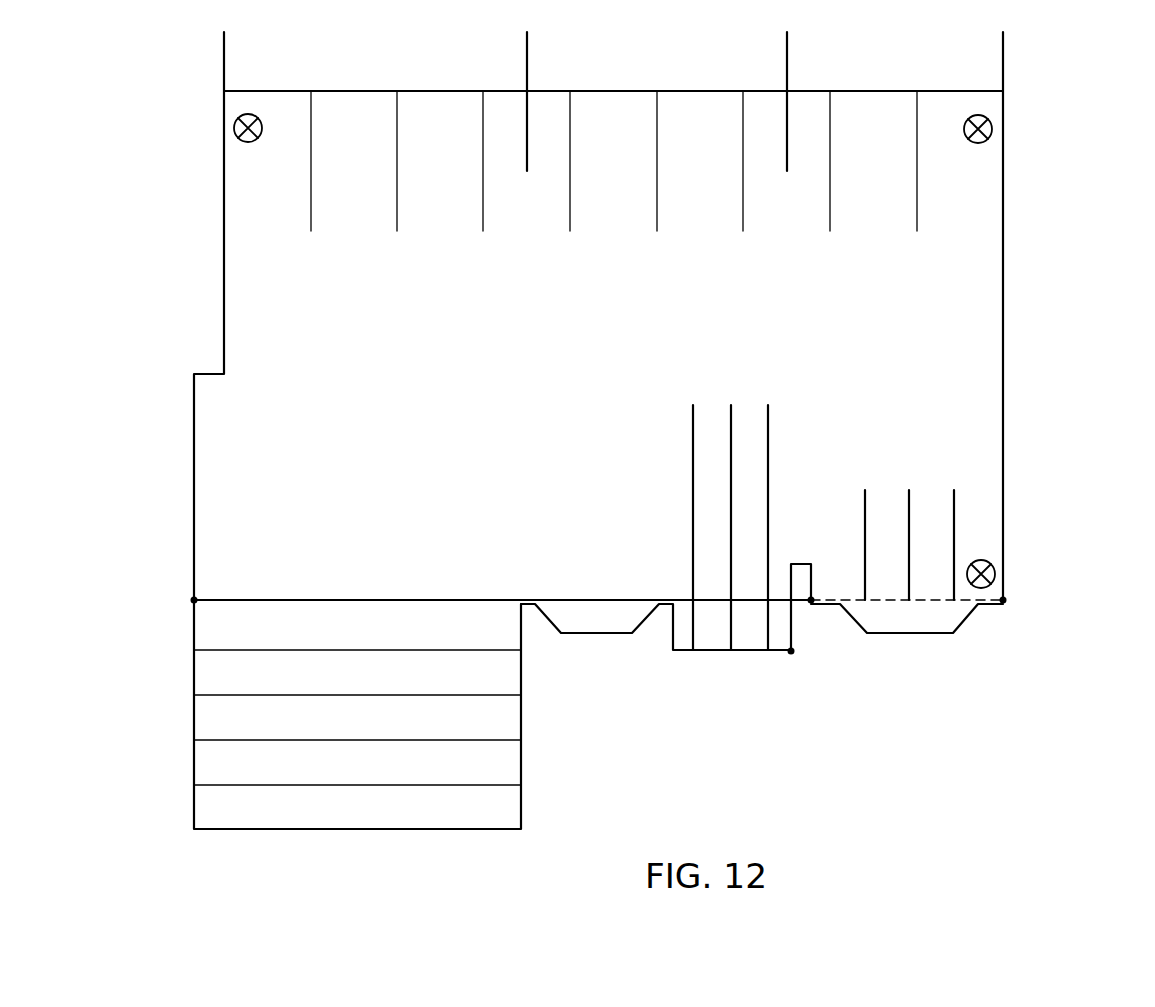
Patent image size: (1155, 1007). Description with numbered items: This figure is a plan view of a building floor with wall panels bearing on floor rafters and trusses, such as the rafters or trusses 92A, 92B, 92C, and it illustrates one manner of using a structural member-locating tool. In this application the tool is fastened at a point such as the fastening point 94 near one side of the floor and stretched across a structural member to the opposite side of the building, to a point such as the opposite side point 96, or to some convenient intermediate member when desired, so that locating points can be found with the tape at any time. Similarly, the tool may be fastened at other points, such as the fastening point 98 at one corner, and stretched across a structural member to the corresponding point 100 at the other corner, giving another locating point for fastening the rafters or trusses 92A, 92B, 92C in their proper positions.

The corresponding point 100 is at (237, 109).
The fastening point 98 is at (991, 110).
The opposite side point 96 is at (194, 600).
The fastening point 94 is at (1003, 600).
The floor rafter or truss 92A is at (693, 642).
The floor rafter or truss 92B is at (730, 651).
The floor rafter or truss 92C is at (791, 651).